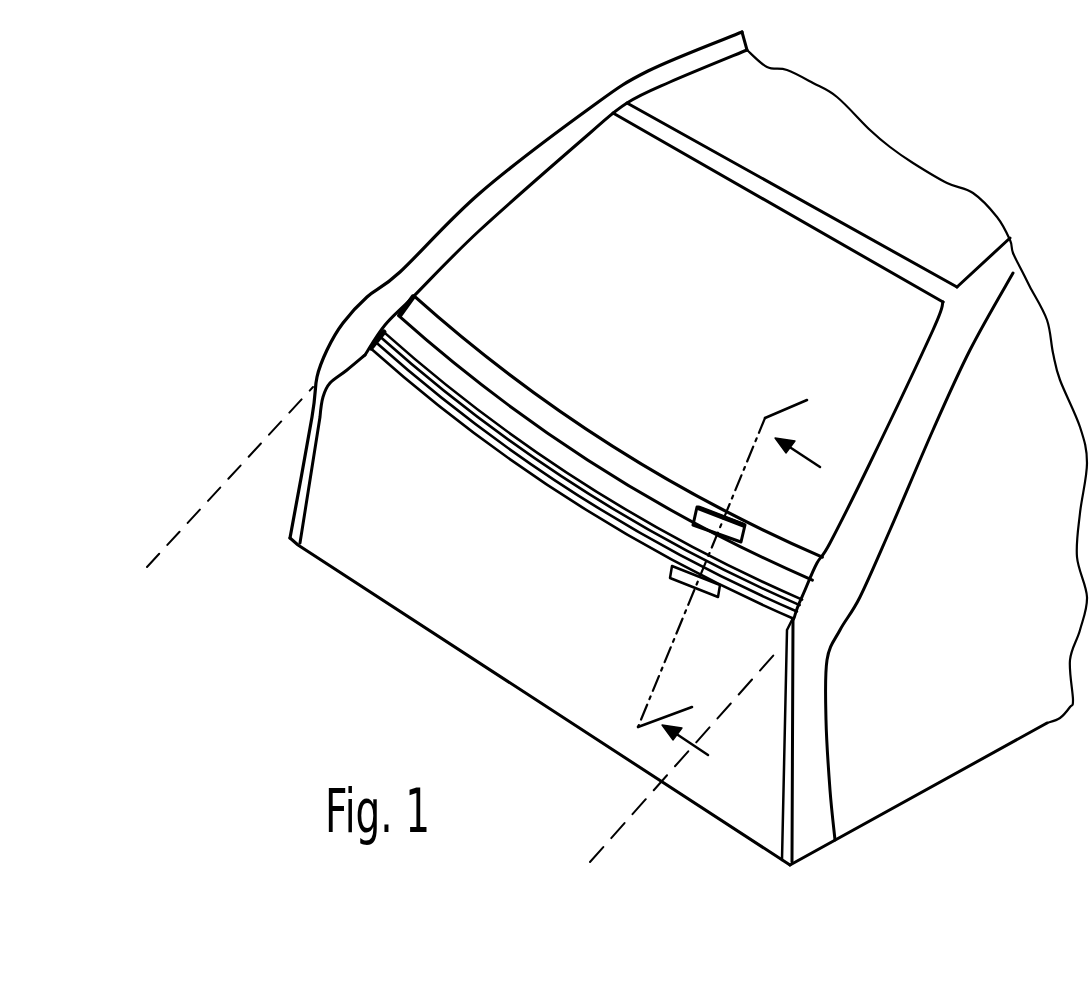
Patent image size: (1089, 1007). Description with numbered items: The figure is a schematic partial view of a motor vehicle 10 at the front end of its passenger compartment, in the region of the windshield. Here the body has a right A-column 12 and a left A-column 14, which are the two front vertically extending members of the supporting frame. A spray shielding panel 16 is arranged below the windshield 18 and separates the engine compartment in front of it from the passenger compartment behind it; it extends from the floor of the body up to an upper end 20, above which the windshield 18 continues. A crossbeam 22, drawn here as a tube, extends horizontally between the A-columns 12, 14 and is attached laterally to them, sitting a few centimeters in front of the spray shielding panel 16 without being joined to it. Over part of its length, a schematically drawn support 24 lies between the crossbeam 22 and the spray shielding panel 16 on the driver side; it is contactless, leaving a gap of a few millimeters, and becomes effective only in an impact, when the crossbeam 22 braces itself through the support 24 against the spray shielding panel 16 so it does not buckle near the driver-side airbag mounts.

The motor vehicle 10 is at (342, 188).
The right A-column 12 is at (483, 210).
The left A-column 14 is at (890, 472).
The spray shielding panel 16 is at (337, 545).
The windshield 18 is at (870, 372).
The upper end 20 is at (486, 372).
The crossbeam 22 is at (615, 493).
The support 24 is at (713, 507).